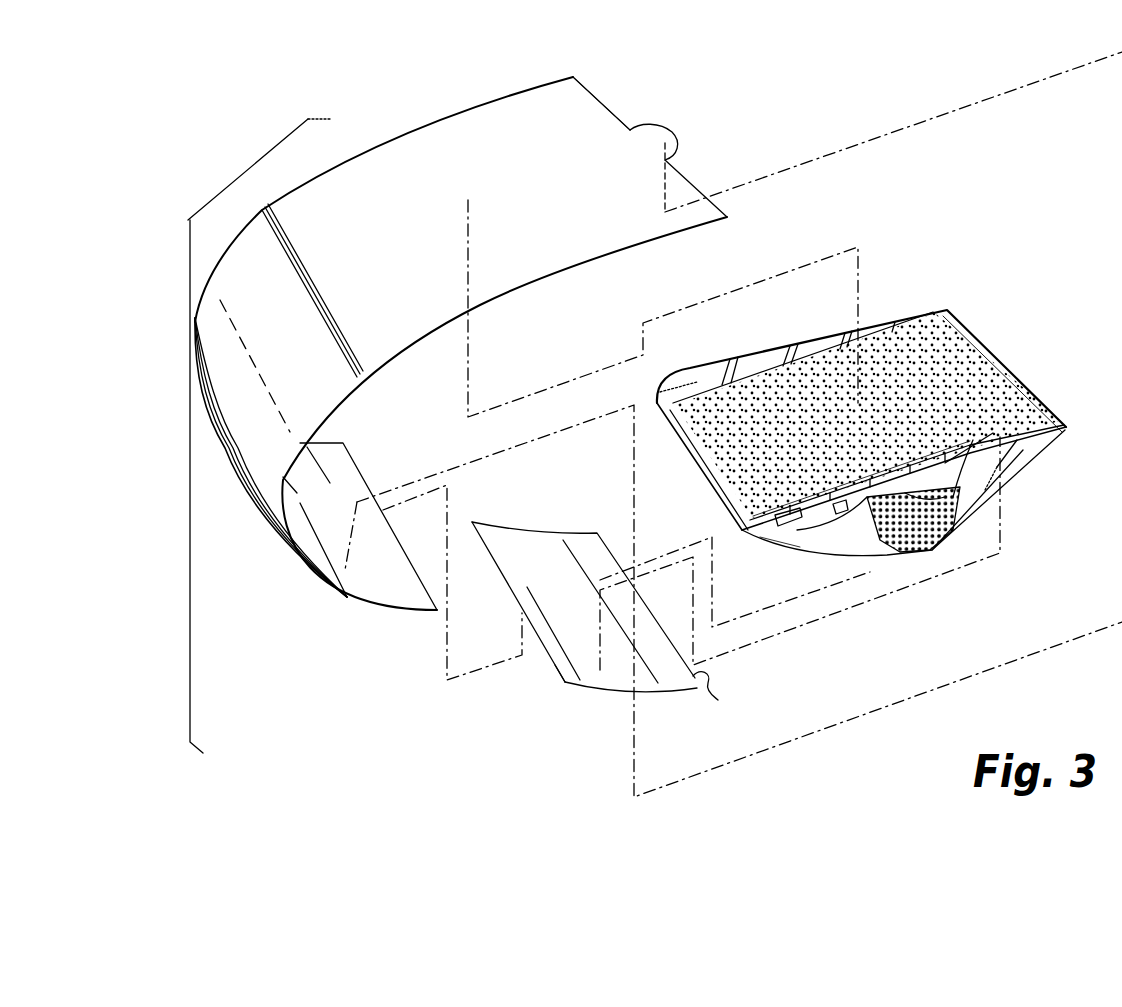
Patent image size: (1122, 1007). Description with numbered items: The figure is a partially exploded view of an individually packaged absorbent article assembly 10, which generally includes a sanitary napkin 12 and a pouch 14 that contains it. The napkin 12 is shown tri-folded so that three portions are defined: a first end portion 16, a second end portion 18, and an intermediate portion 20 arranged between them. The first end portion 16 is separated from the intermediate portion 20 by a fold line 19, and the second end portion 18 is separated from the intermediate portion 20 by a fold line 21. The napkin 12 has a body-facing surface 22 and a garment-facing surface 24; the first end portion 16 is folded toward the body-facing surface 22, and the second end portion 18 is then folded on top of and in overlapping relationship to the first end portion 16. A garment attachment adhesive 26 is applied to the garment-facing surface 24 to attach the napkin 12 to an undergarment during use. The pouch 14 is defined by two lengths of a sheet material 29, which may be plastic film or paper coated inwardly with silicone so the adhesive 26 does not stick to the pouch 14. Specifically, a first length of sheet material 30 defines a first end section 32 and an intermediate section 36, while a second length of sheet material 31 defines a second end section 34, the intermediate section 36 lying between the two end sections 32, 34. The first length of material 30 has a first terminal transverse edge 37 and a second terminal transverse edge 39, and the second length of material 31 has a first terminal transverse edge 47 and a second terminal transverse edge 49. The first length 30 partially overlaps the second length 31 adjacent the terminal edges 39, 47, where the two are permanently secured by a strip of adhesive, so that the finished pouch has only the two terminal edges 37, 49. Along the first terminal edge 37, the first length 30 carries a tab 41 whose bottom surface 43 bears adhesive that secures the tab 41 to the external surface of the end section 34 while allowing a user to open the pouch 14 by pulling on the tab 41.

The individually packaged absorbent article assembly 10 is at (830, 112).
The sanitary napkin 12 is at (990, 337).
The pouch 14 is at (388, 132).
The first end portion 16 is at (1023, 450).
The second end portion 18 is at (797, 508).
The fold line 19 is at (1013, 370).
The intermediate portion 20 is at (930, 347).
The fold line 21 is at (692, 465).
The body-facing surface 22 is at (837, 510).
The garment-facing surface 24 is at (737, 465).
The garment attachment adhesive 26 is at (800, 373).
The sheet material 29 is at (230, 170).
The first length of sheet material 30 is at (517, 128).
The second length of sheet material 31 is at (597, 693).
The first end section 32 is at (499, 189).
The second end section 34 is at (559, 611).
The intermediate section 36 is at (221, 374).
The first terminal transverse edge 37 is at (600, 105).
The second terminal transverse edge 39 is at (358, 470).
The tab 41 is at (653, 130).
The bottom surface 43 is at (680, 153).
The first terminal transverse edge 47 is at (555, 672).
The second terminal transverse edge 49 is at (718, 692).